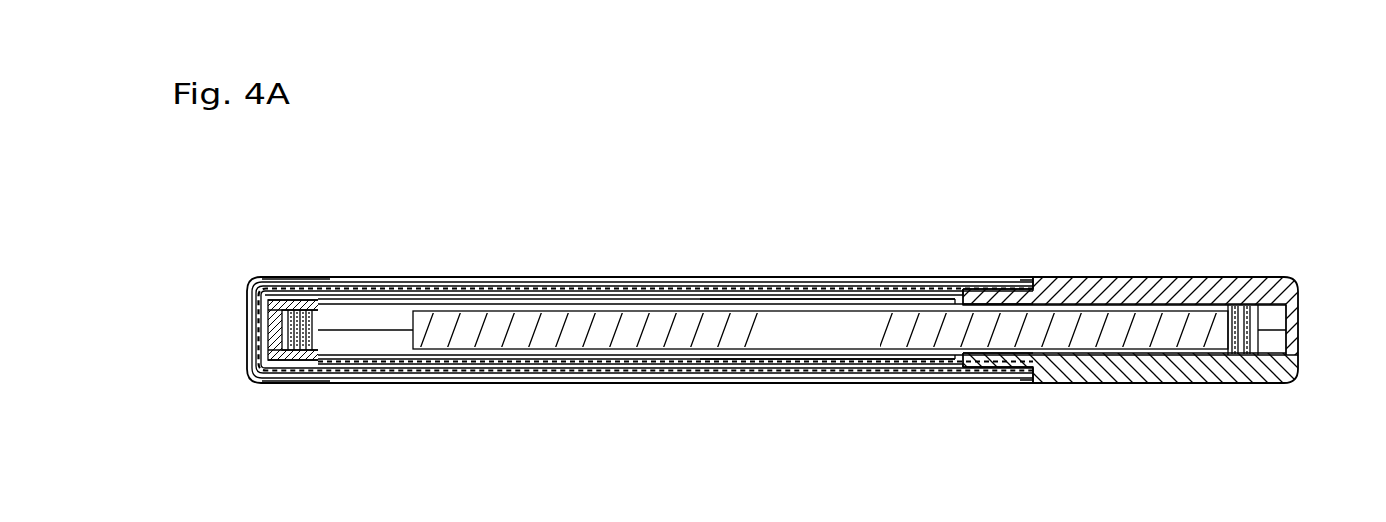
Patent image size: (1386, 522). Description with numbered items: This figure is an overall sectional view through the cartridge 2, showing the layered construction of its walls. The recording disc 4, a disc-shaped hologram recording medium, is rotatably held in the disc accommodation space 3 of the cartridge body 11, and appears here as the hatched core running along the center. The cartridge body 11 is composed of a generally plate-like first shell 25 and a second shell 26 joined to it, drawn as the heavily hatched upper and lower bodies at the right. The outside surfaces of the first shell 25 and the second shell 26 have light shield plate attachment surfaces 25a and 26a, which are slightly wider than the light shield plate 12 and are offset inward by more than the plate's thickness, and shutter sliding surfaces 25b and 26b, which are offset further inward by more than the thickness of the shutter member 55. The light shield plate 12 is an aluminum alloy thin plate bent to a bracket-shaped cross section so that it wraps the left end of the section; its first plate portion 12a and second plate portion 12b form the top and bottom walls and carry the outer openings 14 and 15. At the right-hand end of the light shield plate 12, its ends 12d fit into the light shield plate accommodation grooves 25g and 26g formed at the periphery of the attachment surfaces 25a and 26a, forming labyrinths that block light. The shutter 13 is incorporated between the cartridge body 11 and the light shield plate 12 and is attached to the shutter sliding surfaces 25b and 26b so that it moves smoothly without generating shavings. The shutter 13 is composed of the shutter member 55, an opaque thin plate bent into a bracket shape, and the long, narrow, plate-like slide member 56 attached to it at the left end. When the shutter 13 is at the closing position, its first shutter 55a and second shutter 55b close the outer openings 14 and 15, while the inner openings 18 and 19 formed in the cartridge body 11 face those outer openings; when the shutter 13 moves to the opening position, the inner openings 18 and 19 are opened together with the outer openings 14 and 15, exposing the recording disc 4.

The cartridge 2 is at (743, 268).
The disc accommodation space 3 is at (882, 311).
The recording disc 4 is at (1157, 320).
The cartridge body 11 is at (1114, 393).
The light shield plate 12 is at (515, 268).
The first plate portion 12a is at (293, 279).
The second plate portion 12b is at (283, 383).
The ends of the light shield plate 12d is at (1024, 285).
The shutter 13 is at (591, 268).
The outer opening 14 is at (333, 300).
The outer opening 15 is at (333, 360).
The inner opening 18 is at (341, 310).
The inner opening 19 is at (341, 350).
The first shell 25 is at (1210, 268).
The light shield plate attachment surface 25a is at (998, 297).
The shutter sliding surface 25b is at (952, 292).
The light shield plate accommodation groove 25g is at (1034, 283).
The second shell 26 is at (1208, 393).
The light shield plate attachment surface 26a is at (990, 368).
The shutter sliding surface 26b is at (953, 373).
The light shield plate accommodation groove 26g is at (1034, 372).
The shutter member 55 is at (590, 393).
The first shutter 55a is at (828, 297).
The second shutter 55b is at (838, 361).
The slide member 56 is at (268, 335).